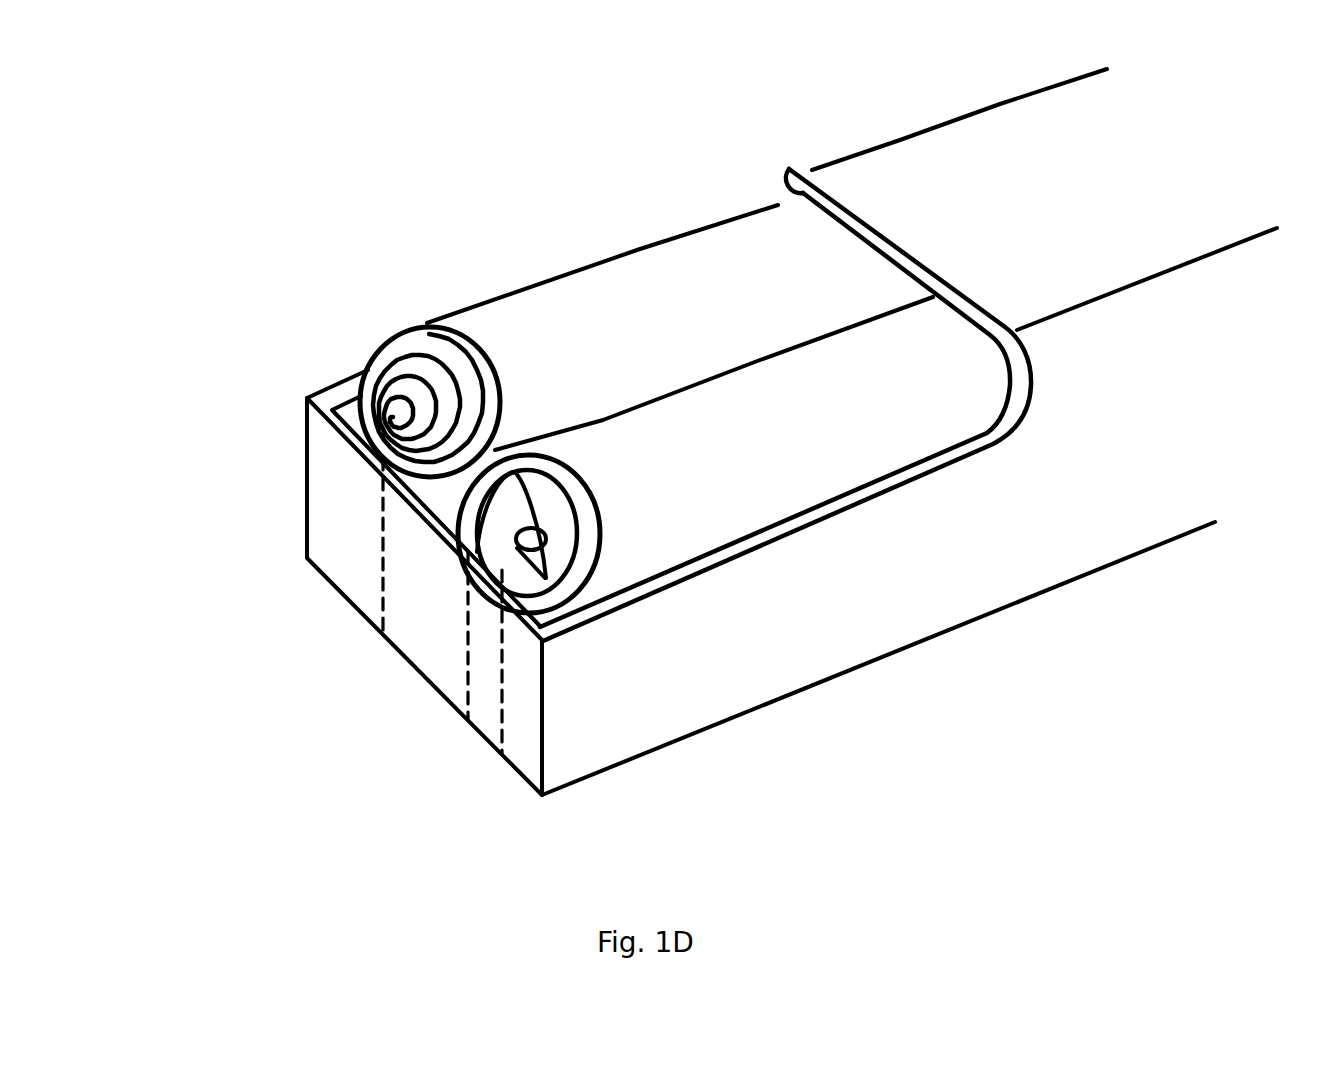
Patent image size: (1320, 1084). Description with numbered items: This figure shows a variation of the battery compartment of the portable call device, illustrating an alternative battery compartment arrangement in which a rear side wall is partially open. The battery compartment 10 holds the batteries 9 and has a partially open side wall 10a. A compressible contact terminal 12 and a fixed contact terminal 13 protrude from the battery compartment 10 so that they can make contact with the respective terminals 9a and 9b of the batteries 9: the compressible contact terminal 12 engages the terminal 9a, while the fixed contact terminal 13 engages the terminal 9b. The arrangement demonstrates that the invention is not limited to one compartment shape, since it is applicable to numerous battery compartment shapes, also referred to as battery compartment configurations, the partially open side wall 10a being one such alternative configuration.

The batteries 9 is at (610, 305).
The battery terminal 9a is at (410, 368).
The battery terminal 9b is at (490, 557).
The battery compartment 10 is at (480, 522).
The partially open side wall 10a is at (437, 517).
The compressible contact terminal 12 is at (392, 362).
The fixed contact terminal 13 is at (520, 550).